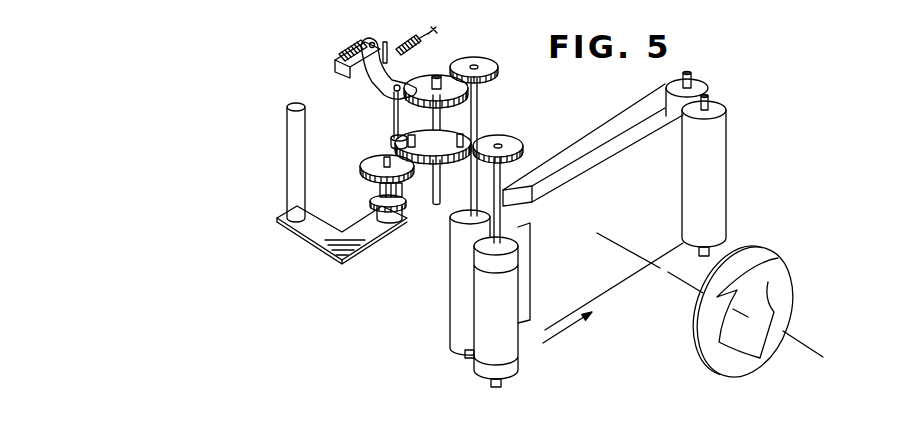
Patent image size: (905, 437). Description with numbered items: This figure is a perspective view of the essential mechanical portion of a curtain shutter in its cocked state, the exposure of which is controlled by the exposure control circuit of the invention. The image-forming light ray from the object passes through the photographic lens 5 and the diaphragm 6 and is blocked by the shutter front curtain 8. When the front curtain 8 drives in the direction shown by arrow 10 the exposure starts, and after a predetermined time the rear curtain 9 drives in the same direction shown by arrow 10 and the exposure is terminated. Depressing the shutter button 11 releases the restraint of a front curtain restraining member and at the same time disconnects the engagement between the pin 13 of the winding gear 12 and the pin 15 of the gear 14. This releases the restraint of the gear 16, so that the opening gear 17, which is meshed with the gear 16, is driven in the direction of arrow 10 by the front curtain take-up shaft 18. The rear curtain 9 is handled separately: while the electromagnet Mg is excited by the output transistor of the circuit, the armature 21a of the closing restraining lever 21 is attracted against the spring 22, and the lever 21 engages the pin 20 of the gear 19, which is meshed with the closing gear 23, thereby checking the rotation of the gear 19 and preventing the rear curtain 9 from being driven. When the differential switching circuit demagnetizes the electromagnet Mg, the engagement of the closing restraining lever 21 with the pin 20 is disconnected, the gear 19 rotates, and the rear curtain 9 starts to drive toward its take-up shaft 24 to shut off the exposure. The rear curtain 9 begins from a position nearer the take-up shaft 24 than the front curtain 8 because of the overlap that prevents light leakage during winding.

The photographic lens 5 is at (760, 310).
The diaphragm 6 is at (702, 312).
The shutter front curtain 8 is at (604, 278).
The rear curtain 9 is at (577, 140).
The arrow 10 is at (572, 333).
The shutter button 11 is at (287, 138).
The winding gear 12 is at (380, 188).
The pin 13 is at (374, 204).
The gear 14 is at (376, 158).
The pin 15 is at (405, 197).
The gear 16 is at (453, 188).
The opening gear 17 is at (502, 138).
The front curtain take-up shaft 18 is at (727, 143).
The gear 19 is at (445, 78).
The pin 20 is at (408, 82).
The closing restraining lever 21 is at (388, 80).
The armature 21a is at (372, 40).
The spring 22 is at (403, 44).
The closing gear 23 is at (492, 62).
The take-up shaft 24 is at (706, 84).
The electromagnet Mg is at (340, 50).